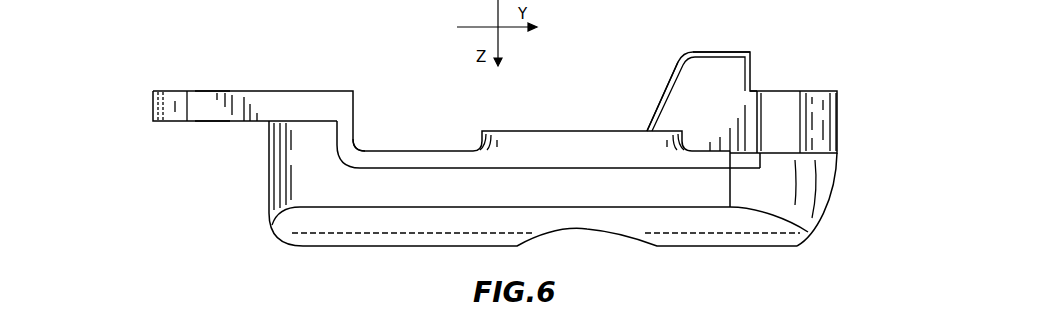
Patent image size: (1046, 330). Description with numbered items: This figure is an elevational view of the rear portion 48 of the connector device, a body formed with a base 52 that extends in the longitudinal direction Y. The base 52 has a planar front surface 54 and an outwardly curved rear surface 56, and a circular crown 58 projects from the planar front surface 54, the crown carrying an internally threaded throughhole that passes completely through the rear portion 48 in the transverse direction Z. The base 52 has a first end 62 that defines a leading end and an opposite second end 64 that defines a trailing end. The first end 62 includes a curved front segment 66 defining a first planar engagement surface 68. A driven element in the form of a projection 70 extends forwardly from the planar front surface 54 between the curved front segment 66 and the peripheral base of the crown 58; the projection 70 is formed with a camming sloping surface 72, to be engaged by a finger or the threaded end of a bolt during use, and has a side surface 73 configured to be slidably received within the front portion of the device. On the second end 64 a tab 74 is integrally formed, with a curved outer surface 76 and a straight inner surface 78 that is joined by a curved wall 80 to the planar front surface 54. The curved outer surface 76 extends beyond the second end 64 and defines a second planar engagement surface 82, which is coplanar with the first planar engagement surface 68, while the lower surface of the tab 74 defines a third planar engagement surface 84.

The rear portion 48 is at (570, 94).
The base 52 is at (453, 207).
The planar front surface 54 is at (424, 150).
The outwardly curved rear surface 56 is at (372, 228).
The circular crown 58 is at (521, 141).
The first end 62 is at (836, 175).
The second end 64 is at (270, 185).
The curved front segment 66 is at (833, 122).
The first planar engagement surface 68 is at (800, 92).
The projection 70 is at (737, 52).
The camming sloping surface 72 is at (667, 85).
The side surface 73 is at (713, 72).
The tab 74 is at (287, 100).
The curved outer surface 76 is at (160, 99).
The straight inner surface 78 is at (355, 98).
The curved wall 80 is at (357, 144).
The second planar engagement surface 82 is at (208, 91).
The third planar engagement surface 84 is at (215, 122).